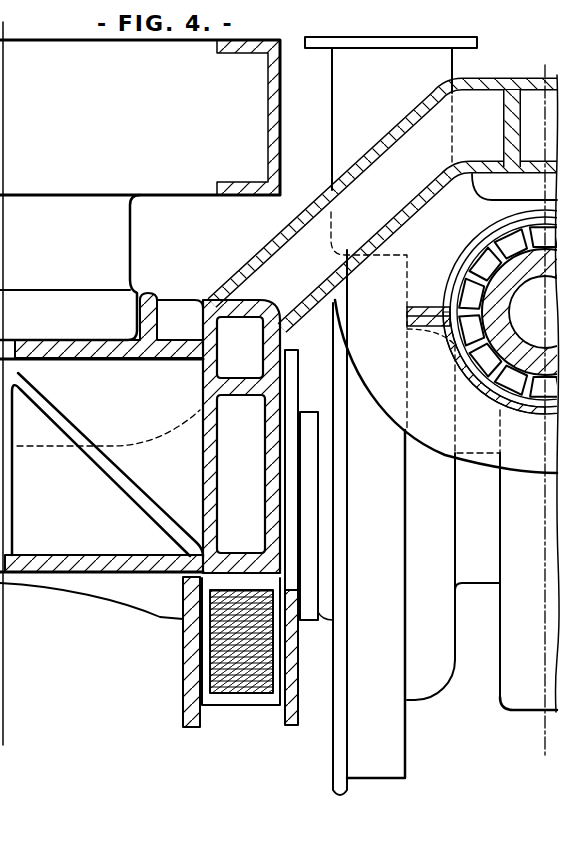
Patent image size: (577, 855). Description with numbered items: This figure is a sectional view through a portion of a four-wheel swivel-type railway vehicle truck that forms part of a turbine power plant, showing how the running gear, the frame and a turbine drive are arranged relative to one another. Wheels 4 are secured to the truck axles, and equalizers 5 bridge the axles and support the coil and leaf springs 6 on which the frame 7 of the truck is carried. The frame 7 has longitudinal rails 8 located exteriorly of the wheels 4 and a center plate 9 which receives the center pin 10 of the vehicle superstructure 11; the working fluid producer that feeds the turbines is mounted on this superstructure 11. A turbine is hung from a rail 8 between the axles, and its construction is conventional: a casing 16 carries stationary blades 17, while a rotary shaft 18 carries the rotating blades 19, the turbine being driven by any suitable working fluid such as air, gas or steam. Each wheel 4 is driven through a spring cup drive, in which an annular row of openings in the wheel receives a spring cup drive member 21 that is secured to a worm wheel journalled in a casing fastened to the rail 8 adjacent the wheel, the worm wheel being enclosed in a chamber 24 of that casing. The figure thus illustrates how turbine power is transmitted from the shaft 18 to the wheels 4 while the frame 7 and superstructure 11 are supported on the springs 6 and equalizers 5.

The wheels 4 is at (388, 416).
The equalizers 5 is at (184, 648).
The coil and leaf springs 6 is at (240, 692).
The frame 7 is at (204, 322).
The longitudinal rails 8 is at (370, 166).
The center plate 9 is at (98, 340).
The center pin 10 is at (70, 267).
The vehicle superstructure 11 is at (140, 117).
The casing 16 is at (497, 228).
The stationary blades 17 is at (468, 268).
The rotary shaft 18 is at (505, 288).
The blades 19 is at (497, 323).
The spring cup drive member 21 is at (430, 688).
The chamber 24 is at (524, 703).